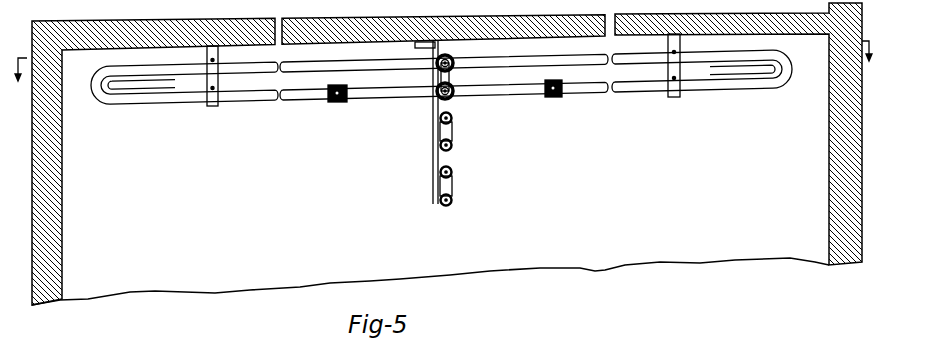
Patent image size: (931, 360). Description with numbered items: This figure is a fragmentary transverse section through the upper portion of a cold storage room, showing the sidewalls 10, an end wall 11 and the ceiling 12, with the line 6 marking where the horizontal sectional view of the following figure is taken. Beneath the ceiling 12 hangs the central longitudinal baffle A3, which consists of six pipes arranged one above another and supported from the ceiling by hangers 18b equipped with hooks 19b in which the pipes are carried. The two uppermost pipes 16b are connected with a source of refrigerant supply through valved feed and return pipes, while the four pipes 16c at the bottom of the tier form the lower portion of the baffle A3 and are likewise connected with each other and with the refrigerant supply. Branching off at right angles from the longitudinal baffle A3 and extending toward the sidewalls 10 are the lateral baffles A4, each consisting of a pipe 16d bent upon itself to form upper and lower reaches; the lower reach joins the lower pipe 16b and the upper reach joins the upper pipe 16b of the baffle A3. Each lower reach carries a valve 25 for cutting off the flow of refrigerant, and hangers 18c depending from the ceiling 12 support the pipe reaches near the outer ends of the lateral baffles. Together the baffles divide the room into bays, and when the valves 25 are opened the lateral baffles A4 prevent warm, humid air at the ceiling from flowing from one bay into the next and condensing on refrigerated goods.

The section line 6— 6 is at (442, 72).
The sidewall 10 is at (63, 282).
The end wall 11 is at (686, 247).
The ceiling 12 is at (113, 46).
The uppermost pipes 16b is at (450, 84).
The lower pipes 16c is at (452, 116).
The pipe bent upon itself 16d is at (240, 97).
The hangers 18b is at (433, 147).
The hangers 18c is at (681, 50).
The hooks 19b is at (453, 175).
The valve 25 is at (336, 103).
The longitudinal baffle A3 is at (470, 134).
The lateral baffle A4 is at (183, 112).